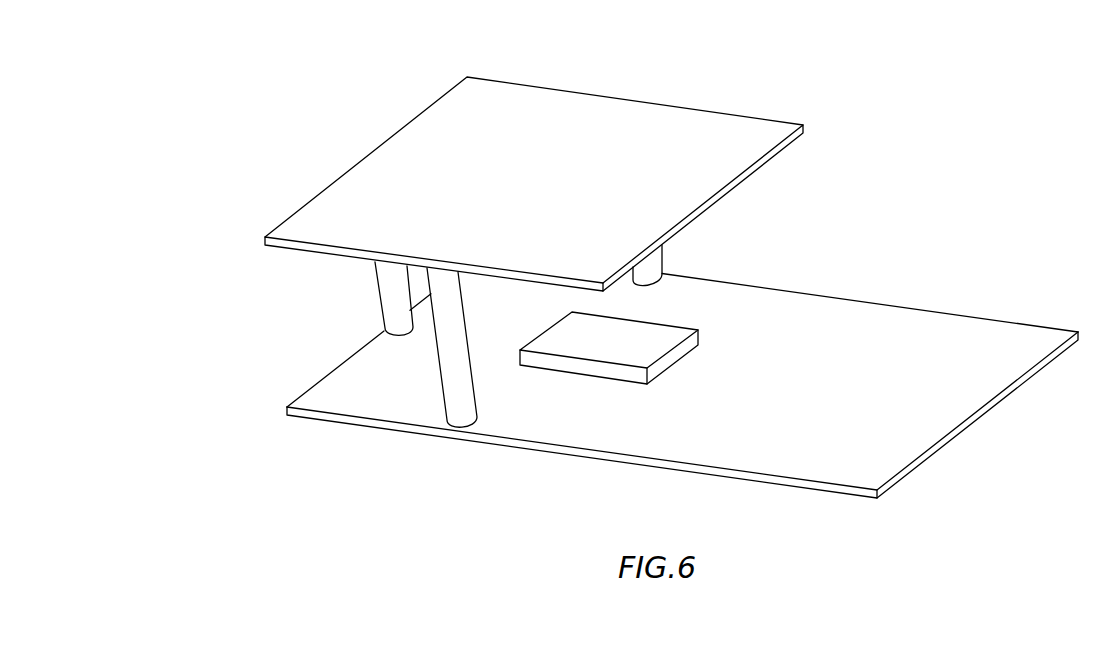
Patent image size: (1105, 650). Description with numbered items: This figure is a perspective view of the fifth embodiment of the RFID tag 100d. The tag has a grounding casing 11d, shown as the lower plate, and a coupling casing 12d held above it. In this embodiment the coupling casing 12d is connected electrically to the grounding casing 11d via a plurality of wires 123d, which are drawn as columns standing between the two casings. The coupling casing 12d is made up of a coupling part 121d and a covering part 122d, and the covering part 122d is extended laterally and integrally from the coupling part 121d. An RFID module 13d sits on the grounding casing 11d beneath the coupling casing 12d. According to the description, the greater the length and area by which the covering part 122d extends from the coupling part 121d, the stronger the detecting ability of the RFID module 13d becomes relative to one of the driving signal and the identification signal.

The RFID tag 100d is at (358, 105).
The grounding casing 11d is at (660, 468).
The coupling casing 12d is at (627, 98).
The coupling part 121d is at (745, 135).
The covering part 122d is at (473, 107).
The wires 123d is at (465, 413).
The RFID module 13d is at (585, 368).